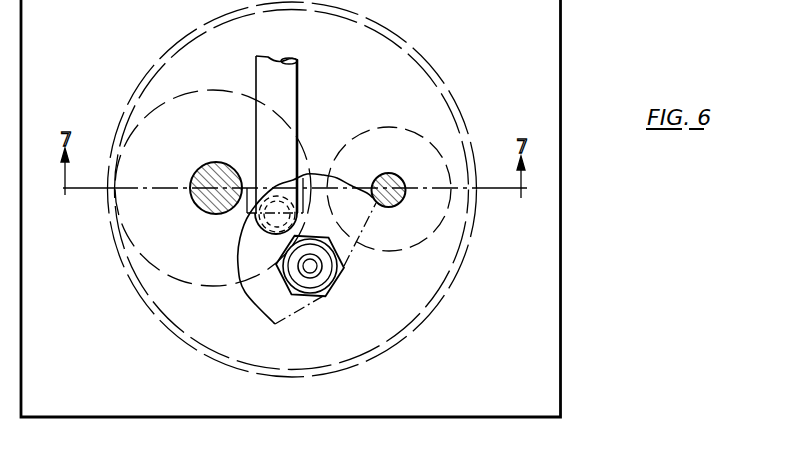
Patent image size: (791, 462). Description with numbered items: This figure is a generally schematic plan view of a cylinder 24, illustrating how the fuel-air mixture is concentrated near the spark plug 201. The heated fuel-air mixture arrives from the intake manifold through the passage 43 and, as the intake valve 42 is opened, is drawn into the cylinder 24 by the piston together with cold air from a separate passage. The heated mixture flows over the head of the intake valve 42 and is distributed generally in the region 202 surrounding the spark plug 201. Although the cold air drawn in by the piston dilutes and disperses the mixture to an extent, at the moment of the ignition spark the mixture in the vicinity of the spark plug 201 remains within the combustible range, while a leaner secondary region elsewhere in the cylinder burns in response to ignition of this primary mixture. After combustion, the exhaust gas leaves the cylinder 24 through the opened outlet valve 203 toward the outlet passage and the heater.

The cylinder 24 is at (450, 263).
The cylinder inlet valve 42 is at (207, 167).
The passage 43 is at (292, 107).
The spark plug 201 is at (334, 287).
The region 202 is at (245, 297).
The outlet valve 203 is at (392, 207).